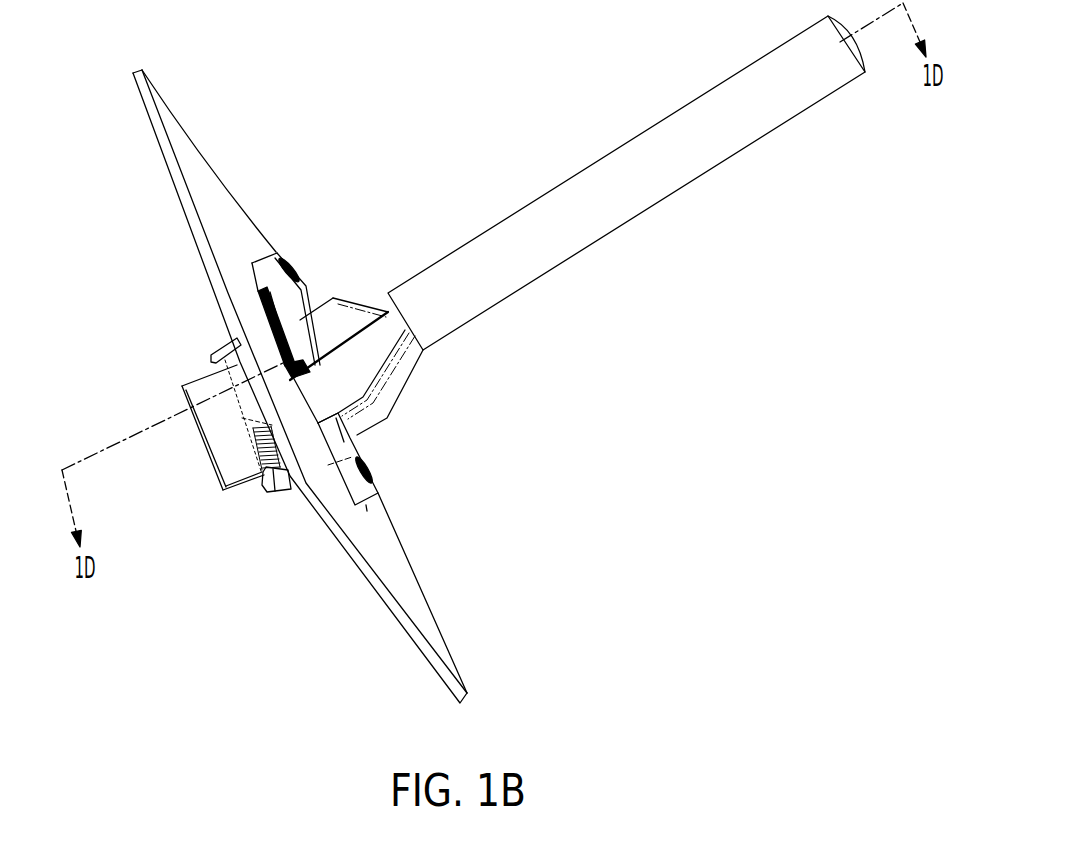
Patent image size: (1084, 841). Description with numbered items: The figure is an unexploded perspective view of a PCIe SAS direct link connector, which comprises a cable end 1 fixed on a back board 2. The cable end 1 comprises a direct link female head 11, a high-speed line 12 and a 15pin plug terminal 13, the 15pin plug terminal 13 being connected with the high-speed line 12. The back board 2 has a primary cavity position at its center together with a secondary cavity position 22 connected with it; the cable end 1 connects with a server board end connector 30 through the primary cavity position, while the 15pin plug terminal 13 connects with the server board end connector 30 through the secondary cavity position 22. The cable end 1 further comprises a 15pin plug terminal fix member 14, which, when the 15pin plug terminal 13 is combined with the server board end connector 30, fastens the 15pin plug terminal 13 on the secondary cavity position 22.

The cable end 1 is at (732, 77).
The back board 2 is at (365, 575).
The direct link female head 11 is at (233, 357).
The high-speed line 12 is at (520, 240).
The 15pin plug terminal 13 is at (292, 379).
The 15pin plug terminal fix member 14 is at (265, 290).
The secondary cavity position 22 is at (270, 323).
The server board end connector 30 is at (242, 487).